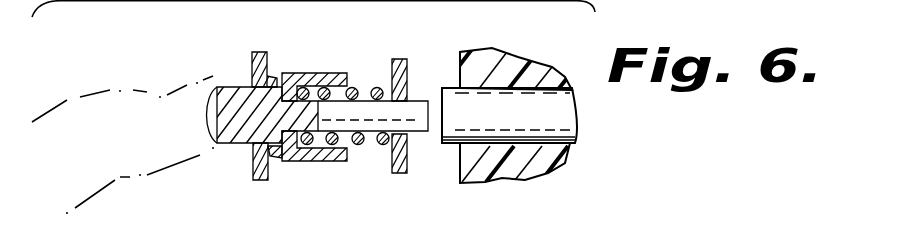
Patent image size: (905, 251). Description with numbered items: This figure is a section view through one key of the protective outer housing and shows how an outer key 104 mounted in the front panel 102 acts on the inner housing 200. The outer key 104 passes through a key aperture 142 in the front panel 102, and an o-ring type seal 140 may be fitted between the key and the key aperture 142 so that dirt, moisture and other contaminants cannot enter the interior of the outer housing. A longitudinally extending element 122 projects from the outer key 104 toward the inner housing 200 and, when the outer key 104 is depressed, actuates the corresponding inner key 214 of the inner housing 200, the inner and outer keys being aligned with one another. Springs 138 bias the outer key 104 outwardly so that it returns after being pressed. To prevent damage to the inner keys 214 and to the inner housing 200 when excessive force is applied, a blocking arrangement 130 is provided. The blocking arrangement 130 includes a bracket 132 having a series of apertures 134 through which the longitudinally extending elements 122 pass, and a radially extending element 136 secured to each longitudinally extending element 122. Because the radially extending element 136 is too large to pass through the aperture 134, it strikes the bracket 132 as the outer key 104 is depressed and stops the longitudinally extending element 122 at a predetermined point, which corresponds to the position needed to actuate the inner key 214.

The front panel 102 is at (258, 182).
The outer keys 104 is at (232, 123).
The longitudinally extending element 122 is at (372, 120).
The blocking arrangement 130 is at (229, 72).
The bracket 132 is at (405, 155).
The apertures 134 is at (403, 105).
The radially extending element 136 is at (327, 73).
The springs 138 is at (379, 95).
The o-ring type seal 140 is at (275, 152).
The key apertures 142 is at (250, 90).
The inner housing 200 is at (567, 60).
The inner keys 214 is at (562, 120).